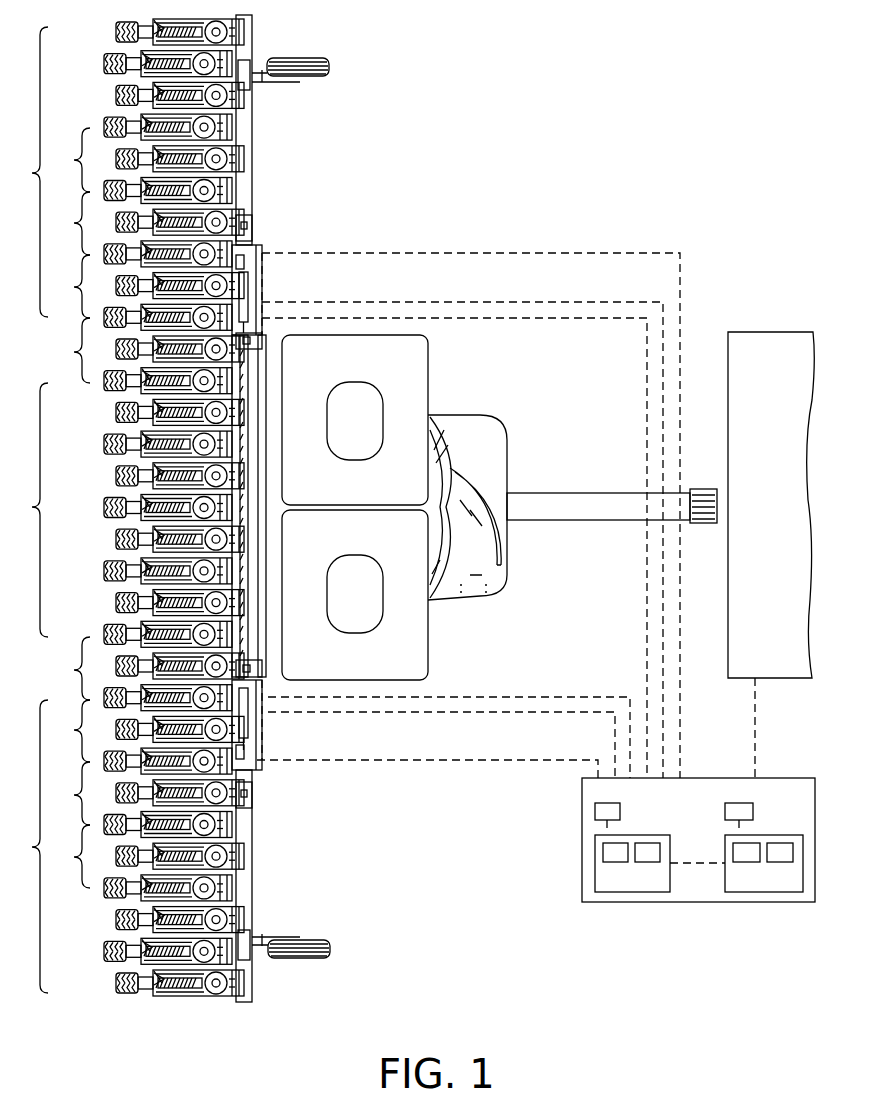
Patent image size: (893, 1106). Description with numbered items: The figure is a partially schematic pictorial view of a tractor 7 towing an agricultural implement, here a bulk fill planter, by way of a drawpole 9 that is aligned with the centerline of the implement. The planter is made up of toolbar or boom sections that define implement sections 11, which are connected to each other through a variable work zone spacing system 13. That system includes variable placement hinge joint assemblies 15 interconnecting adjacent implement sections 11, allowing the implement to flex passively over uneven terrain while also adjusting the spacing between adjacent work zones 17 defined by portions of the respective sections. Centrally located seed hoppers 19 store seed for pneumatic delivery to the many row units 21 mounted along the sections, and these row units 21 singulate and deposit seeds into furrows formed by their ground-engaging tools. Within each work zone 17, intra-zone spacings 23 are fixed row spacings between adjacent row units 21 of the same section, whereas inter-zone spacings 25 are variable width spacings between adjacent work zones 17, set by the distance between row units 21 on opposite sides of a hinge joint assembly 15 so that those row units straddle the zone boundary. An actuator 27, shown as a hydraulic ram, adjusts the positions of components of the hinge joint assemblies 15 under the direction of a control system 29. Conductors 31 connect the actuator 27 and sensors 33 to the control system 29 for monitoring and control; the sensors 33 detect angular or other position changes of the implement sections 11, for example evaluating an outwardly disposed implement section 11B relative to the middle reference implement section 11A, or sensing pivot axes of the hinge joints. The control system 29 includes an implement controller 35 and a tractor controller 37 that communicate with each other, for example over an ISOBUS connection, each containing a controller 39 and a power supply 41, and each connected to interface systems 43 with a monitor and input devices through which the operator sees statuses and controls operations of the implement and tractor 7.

The tractor 7 is at (777, 517).
The drawpole 9 is at (610, 521).
The implement sections 11 is at (285, 128).
The reference implement section 11A is at (272, 328).
The outwardly disposed implement section 11B is at (256, 150).
The variable work zone spacing system 13 is at (274, 738).
The variable placement hinge joint assemblies 15 is at (284, 264).
The work zones 17 is at (27, 510).
The seed hoppers 19 is at (416, 368).
The row units 21 is at (232, 38).
The intra-zone spacings 23 is at (68, 508).
The inter-zone spacings 25 is at (67, 509).
The actuator 27 is at (248, 296).
The control system 29 is at (695, 906).
The conductors 31 is at (554, 303).
The sensors 33 is at (250, 222).
The implement controller 35 is at (632, 834).
The tractor controller 37 is at (764, 834).
The controller 39 is at (614, 862).
The power supply 41 is at (647, 862).
The interface systems 43 is at (595, 817).